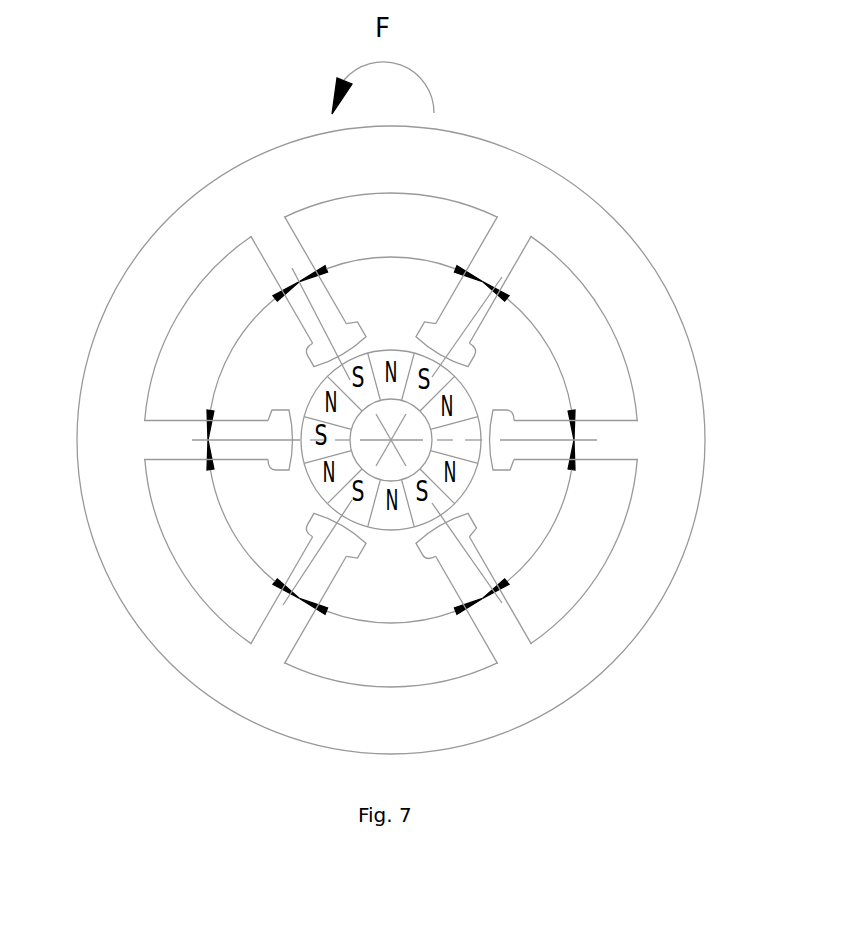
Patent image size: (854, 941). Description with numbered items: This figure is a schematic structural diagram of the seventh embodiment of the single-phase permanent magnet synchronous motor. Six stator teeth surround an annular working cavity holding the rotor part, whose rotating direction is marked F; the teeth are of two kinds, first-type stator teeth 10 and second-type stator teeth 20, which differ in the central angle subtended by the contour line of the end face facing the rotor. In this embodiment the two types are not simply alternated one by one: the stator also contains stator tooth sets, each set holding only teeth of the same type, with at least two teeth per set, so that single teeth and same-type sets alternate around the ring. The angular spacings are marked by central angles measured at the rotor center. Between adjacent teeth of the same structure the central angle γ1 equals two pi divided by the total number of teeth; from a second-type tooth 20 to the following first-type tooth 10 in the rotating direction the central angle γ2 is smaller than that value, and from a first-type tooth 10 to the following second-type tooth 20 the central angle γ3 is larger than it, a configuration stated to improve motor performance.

The first-type stator teeth 10 is at (497, 260).
The second-type stator teeth 20 is at (283, 257).
The central angle γ 1 is at (315, 468).
The central angle γ 2 is at (391, 439).
The central angle γ 3 is at (465, 412).